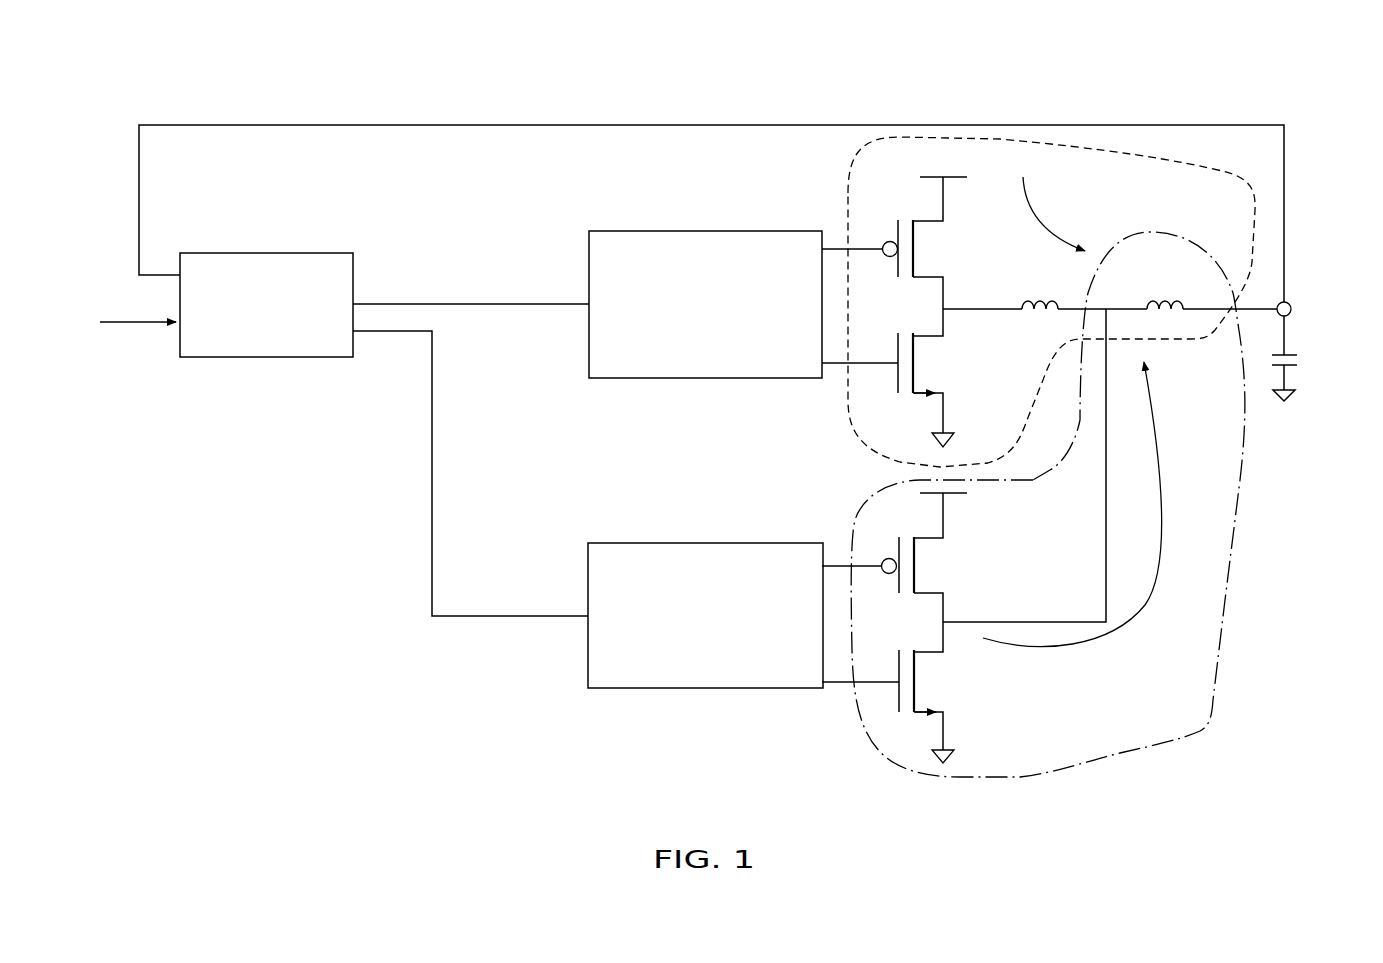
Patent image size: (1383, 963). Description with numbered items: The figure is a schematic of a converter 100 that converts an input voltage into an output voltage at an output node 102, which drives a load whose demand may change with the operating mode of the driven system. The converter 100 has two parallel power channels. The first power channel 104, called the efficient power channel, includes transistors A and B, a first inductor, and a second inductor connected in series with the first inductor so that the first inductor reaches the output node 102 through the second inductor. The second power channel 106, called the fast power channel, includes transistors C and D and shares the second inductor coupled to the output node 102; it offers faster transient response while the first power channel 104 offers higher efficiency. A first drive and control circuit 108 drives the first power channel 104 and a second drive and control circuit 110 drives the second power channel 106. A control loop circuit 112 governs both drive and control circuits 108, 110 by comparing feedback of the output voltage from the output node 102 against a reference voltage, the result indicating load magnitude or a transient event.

The converter 100 is at (98, 94).
The output node 102 is at (1292, 309).
The first power channel 104 is at (1118, 149).
The second power channel 106 is at (1222, 628).
The first drive and control circuit 108 is at (633, 229).
The second drive and control circuit 110 is at (633, 541).
The control loop circuit 112 is at (238, 250).